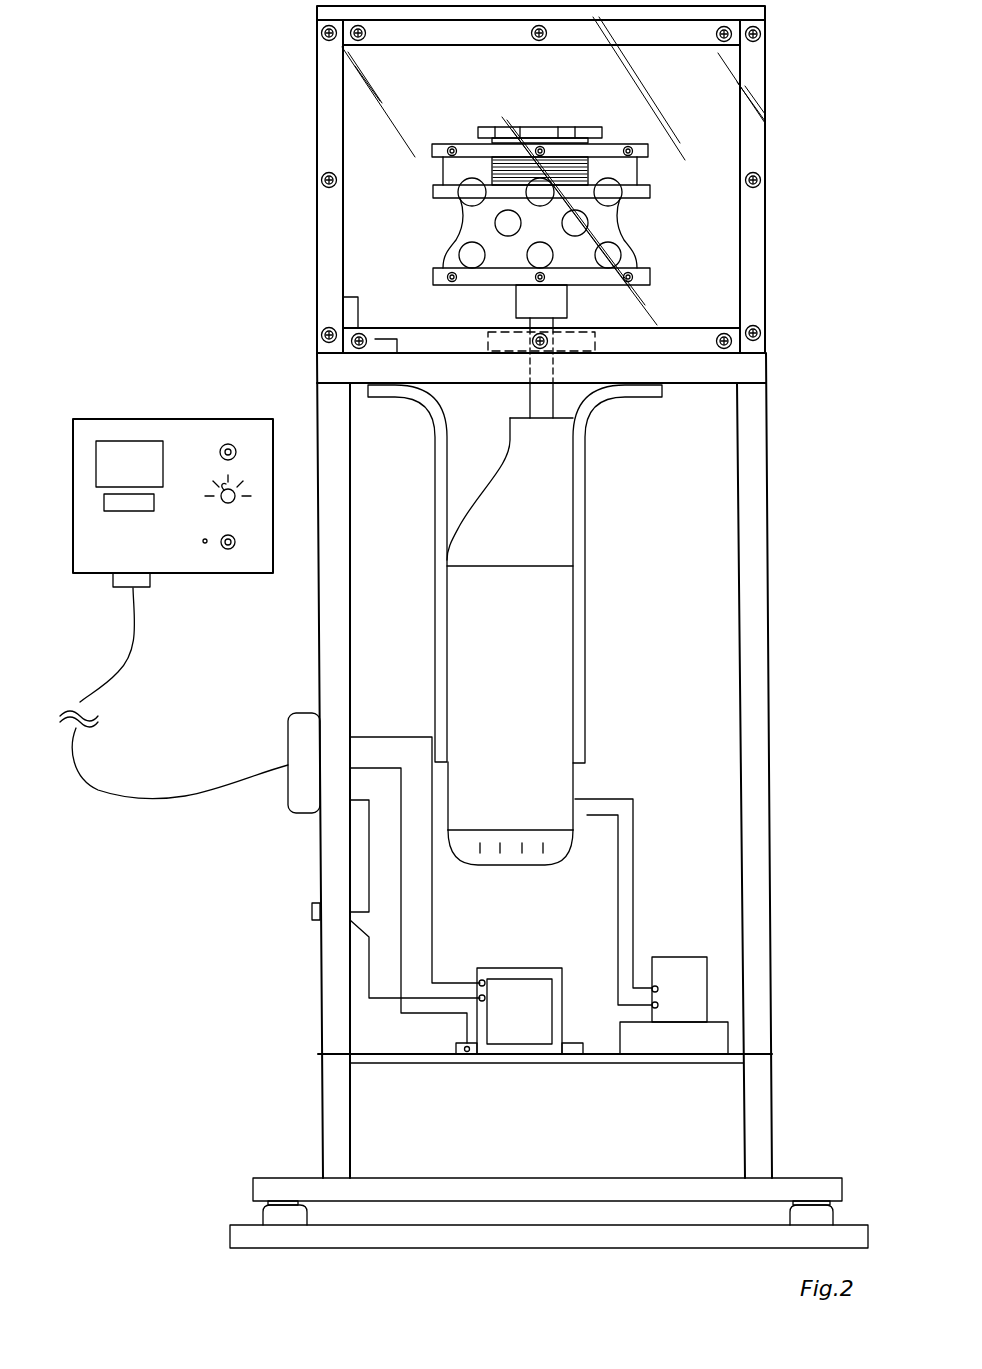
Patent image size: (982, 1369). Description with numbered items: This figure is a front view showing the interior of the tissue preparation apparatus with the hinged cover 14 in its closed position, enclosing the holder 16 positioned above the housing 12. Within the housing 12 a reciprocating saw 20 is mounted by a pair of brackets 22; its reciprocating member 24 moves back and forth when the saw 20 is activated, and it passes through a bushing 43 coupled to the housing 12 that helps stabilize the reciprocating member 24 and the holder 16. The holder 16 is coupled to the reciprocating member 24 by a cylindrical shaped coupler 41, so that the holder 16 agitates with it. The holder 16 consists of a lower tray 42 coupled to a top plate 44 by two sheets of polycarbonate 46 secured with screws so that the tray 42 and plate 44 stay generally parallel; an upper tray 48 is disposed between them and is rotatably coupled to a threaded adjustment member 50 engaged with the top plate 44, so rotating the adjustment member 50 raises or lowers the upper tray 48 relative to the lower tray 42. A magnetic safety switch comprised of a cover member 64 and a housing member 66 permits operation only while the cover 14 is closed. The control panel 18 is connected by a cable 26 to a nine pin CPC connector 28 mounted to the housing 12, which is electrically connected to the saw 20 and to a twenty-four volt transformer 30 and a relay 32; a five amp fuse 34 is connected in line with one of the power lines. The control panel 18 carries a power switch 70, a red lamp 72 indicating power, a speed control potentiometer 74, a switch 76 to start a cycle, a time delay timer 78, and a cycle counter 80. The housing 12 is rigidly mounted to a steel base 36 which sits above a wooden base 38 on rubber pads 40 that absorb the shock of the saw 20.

The housing 12 is at (753, 765).
The hinged cover 14 is at (766, 63).
The holder 16 is at (533, 246).
The control panel 18 is at (178, 486).
The reciprocating saw 20 is at (537, 630).
The brackets 22 is at (437, 467).
The reciprocating member 24 is at (538, 403).
The cable 26 is at (180, 790).
The CPC connector 28 is at (292, 802).
The transformer 30 is at (500, 1047).
The relay 32 is at (668, 1010).
The fuse 34 is at (312, 912).
The steel base 36 is at (578, 1190).
The wooden base 38 is at (382, 1248).
The rubber pads 40 is at (282, 1218).
The coupler 41 is at (568, 304).
The lower tray 42 is at (647, 275).
The bushing 43 is at (510, 325).
The top plate 44 is at (643, 143).
The sheets of polycarbonate 46 is at (460, 235).
The upper tray 48 is at (642, 179).
The threaded adjustment member 50 is at (535, 127).
The cover member 64 is at (350, 295).
The housing member 66 is at (380, 338).
The power switch 70 is at (228, 549).
The red lamp 72 is at (205, 543).
The speed control potentiometer 74 is at (230, 503).
The switch 76 is at (232, 445).
The time delay timer 78 is at (117, 452).
The cycle counter 80 is at (107, 500).